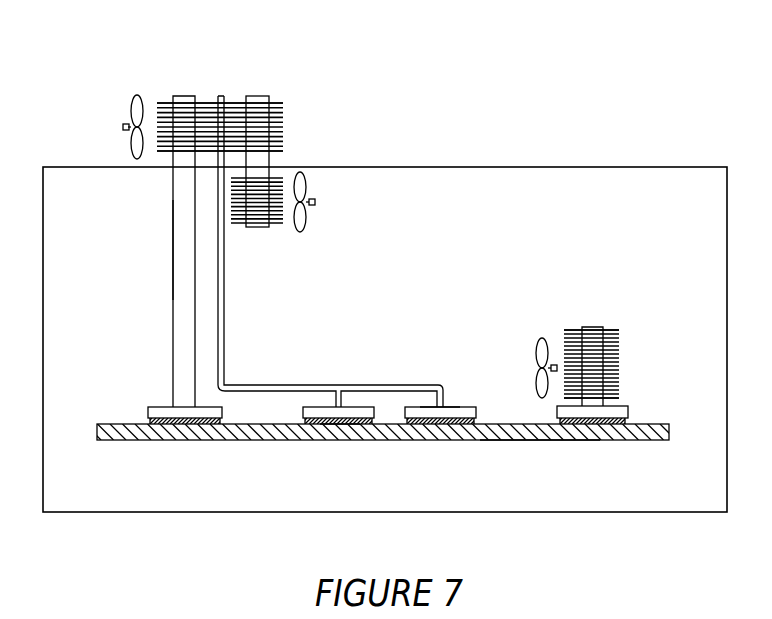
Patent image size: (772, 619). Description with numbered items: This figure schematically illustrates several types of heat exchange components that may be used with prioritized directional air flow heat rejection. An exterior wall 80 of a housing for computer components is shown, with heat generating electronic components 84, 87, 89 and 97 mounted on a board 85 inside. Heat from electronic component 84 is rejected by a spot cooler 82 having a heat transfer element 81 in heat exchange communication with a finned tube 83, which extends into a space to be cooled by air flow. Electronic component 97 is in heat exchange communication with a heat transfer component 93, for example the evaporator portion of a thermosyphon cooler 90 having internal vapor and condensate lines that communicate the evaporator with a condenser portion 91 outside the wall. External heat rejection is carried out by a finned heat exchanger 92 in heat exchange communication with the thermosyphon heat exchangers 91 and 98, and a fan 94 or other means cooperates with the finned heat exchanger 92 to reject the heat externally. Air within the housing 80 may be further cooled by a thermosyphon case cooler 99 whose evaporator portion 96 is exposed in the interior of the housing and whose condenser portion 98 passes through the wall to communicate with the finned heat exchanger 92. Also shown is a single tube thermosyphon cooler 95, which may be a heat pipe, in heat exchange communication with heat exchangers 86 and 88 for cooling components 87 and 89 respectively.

The exterior wall 80 is at (525, 167).
The heat transfer element 81 is at (628, 411).
The spot cooler 82 is at (642, 383).
The finned tube 83 is at (592, 326).
The electronic component 84 is at (607, 440).
The board 85 is at (543, 440).
The heat exchanger 86 is at (458, 406).
The electronic component 87 is at (455, 440).
The heat exchanger 88 is at (301, 413).
The electronic component 89 is at (340, 426).
The thermosyphon cooler 90 is at (173, 248).
The condenser portion 91 is at (184, 96).
The finned heat exchanger 92 is at (257, 96).
The heat transfer component 93 is at (158, 407).
The fan 94 is at (133, 102).
The single tube thermosyphon cooler 95 is at (224, 293).
The evaporator portion 96 is at (270, 216).
The electronic component 97 is at (150, 420).
The condenser portion 98 is at (283, 117).
The thermosyphon case cooler 99 is at (330, 72).